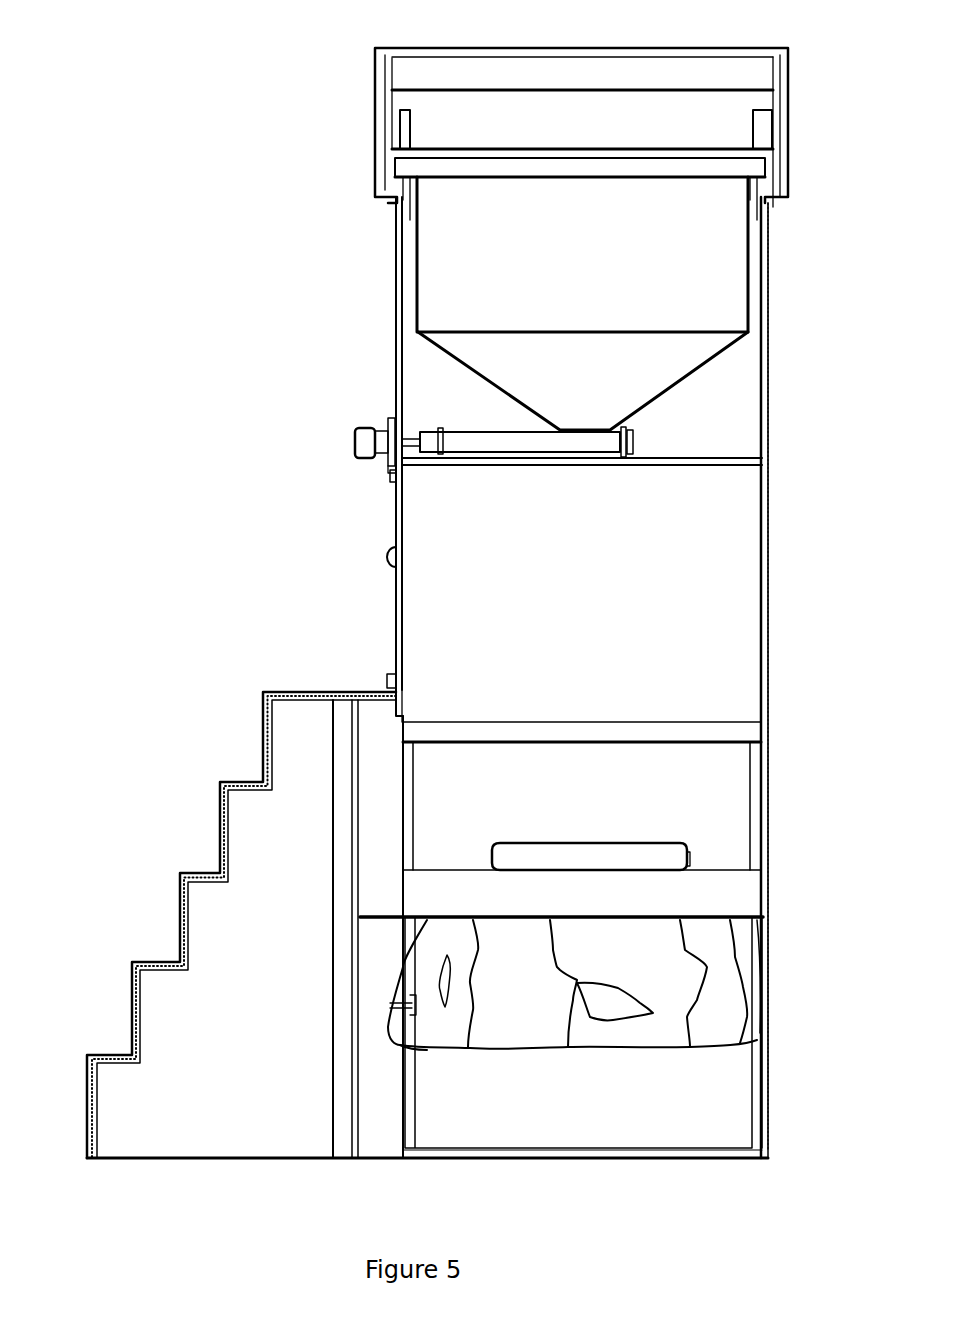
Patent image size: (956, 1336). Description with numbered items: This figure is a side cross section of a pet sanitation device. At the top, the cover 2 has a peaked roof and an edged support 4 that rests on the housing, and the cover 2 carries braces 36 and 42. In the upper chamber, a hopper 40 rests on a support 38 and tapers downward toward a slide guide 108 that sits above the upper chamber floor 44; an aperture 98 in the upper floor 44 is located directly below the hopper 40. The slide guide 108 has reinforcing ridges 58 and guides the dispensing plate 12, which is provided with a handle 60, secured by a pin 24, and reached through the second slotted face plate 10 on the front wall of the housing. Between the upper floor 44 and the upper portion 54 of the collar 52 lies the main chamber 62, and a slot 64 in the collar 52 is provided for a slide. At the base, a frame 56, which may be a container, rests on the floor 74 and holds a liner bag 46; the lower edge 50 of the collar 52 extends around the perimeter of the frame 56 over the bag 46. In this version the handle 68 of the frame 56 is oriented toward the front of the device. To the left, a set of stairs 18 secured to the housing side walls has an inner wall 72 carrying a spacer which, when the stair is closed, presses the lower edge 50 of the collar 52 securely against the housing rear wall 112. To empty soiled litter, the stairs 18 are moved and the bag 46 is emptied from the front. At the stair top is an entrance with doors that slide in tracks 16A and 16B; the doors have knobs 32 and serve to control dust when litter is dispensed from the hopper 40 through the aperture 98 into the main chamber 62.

The cover 2 is at (627, 48).
The edged support 4 is at (388, 202).
The second slotted face plate 10 is at (392, 418).
The second sliding plate 12 is at (412, 437).
The track 16A is at (390, 476).
The track 16B is at (390, 683).
The stairs 18 is at (268, 747).
The pin 24 is at (383, 430).
The knob 32 is at (388, 557).
The brace 36 is at (400, 73).
The support 38 is at (407, 217).
The hopper 40 is at (733, 303).
The brace 42 is at (395, 102).
The upper chamber floor 44 is at (742, 460).
The liner bag 46 is at (742, 967).
The lower edge 50 is at (730, 887).
The collar 52 is at (720, 788).
The upper portion 54 is at (742, 733).
The frame 56 is at (727, 1093).
The reinforcing ridges 58 is at (630, 427).
The handle 60 is at (358, 430).
The main chamber 62 is at (733, 545).
The slot 64 is at (662, 853).
The handle 68 is at (392, 1000).
The inner wall 72 is at (349, 773).
The floor 74 is at (405, 1147).
The aperture 98 is at (588, 465).
The slide guide 108 is at (633, 445).
The housing rear wall 112 is at (765, 628).